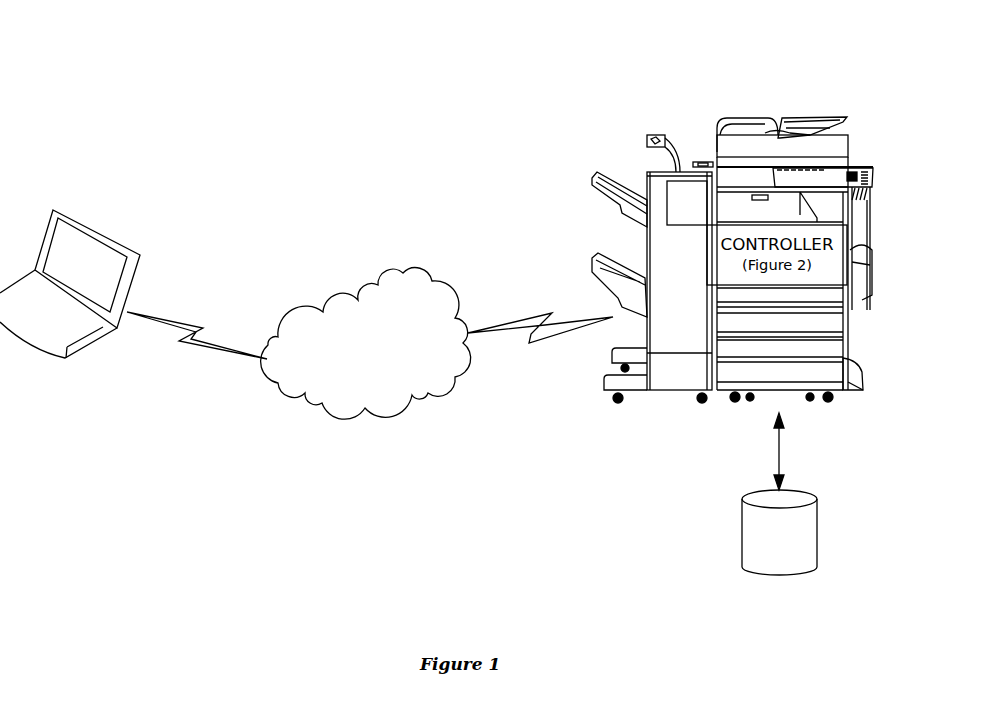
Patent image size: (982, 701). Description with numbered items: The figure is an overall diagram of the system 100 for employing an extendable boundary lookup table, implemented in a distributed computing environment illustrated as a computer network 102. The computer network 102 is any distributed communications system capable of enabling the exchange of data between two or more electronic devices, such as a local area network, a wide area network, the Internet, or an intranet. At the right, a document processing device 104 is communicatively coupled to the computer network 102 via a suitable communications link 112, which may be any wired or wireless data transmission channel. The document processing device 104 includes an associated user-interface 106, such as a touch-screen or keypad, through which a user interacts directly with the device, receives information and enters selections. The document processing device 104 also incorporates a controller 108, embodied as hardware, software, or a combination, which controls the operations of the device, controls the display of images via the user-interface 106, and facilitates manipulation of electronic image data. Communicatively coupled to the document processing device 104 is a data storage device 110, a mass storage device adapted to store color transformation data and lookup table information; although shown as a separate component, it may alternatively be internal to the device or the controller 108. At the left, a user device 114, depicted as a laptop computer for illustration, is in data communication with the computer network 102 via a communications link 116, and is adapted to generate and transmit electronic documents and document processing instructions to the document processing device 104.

The system 100 is at (200, 63).
The computer network 102 is at (415, 264).
The document processing device 104 is at (745, 117).
The user-interface 106 is at (872, 173).
The controller 108 is at (852, 248).
The data storage device 110 is at (808, 497).
The communications link 112 is at (535, 340).
The user device 114 is at (53, 210).
The communications link 116 is at (204, 327).